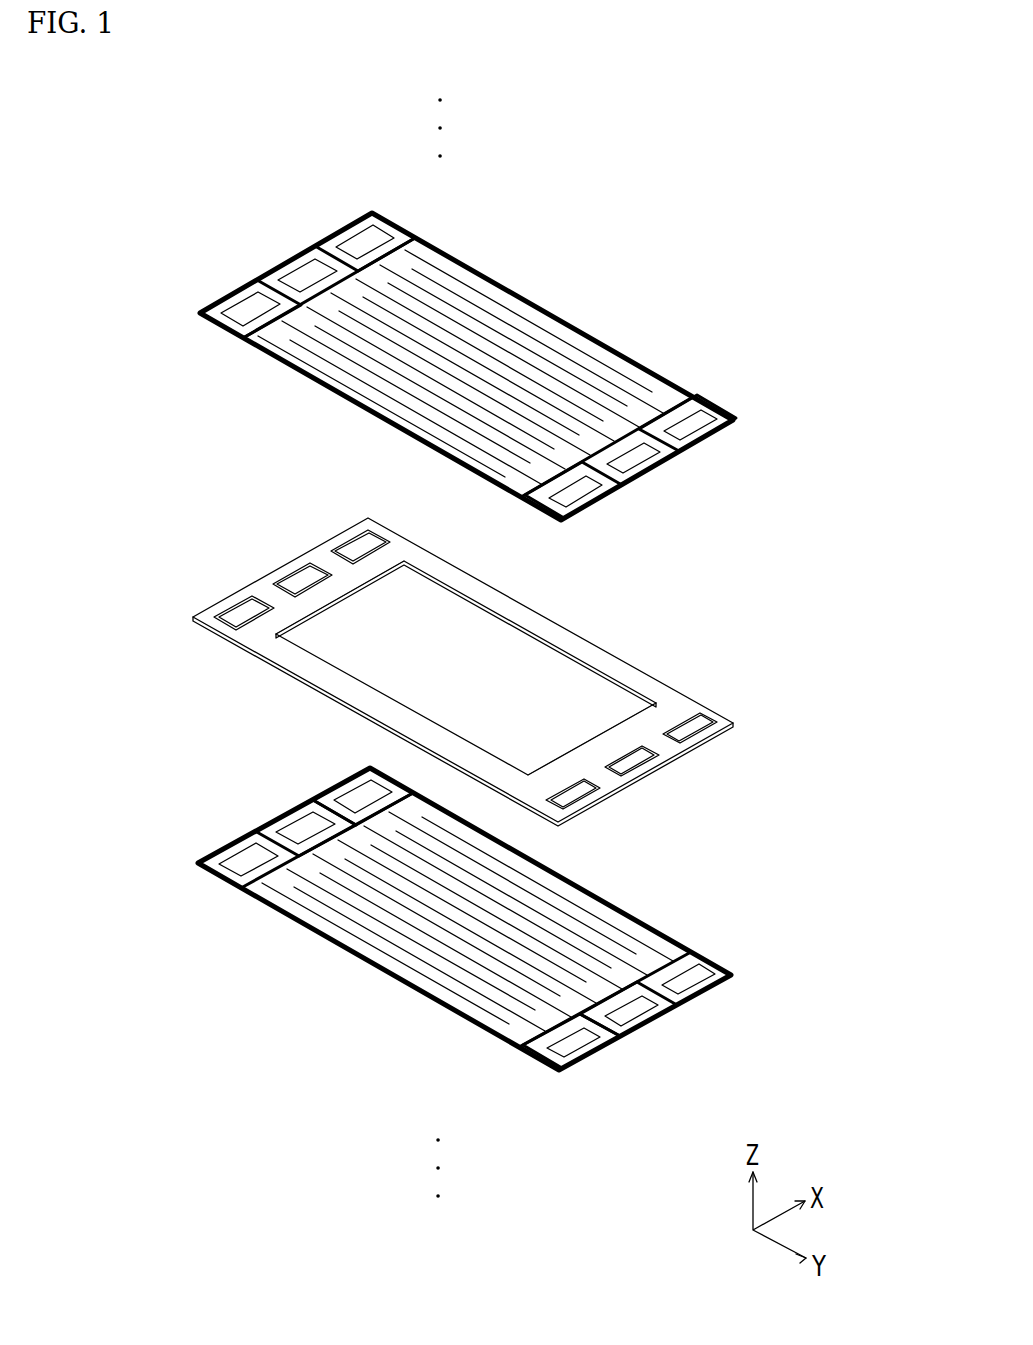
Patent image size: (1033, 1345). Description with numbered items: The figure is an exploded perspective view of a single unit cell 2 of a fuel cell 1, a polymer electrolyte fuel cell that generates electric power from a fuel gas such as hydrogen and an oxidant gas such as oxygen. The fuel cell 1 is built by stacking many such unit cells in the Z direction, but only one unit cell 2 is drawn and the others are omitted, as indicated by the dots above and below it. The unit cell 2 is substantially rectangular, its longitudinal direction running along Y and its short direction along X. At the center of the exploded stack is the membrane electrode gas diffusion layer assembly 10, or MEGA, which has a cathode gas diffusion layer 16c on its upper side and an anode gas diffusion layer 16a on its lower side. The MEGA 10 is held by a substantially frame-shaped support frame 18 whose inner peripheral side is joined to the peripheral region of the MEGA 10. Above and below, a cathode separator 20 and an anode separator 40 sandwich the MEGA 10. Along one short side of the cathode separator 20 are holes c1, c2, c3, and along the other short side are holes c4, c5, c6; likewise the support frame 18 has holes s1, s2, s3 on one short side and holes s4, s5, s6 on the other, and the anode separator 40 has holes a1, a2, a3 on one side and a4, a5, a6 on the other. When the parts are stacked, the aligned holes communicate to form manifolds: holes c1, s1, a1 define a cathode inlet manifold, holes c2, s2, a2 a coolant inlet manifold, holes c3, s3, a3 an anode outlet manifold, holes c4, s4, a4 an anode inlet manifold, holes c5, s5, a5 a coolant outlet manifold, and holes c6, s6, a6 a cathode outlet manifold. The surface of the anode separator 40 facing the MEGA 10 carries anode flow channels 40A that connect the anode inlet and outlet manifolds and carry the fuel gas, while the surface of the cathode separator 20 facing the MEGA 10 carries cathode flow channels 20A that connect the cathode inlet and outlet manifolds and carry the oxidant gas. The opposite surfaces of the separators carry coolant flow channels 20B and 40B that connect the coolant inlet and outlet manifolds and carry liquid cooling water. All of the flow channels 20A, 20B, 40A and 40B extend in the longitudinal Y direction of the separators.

The fuel cell 1 is at (762, 160).
The unit cell 2 is at (784, 428).
The membrane electrode gas diffusion layer assembly 10 is at (513, 673).
The anode gas diffusion layer 16a is at (562, 728).
The cathode gas diffusion layer 16c is at (323, 625).
The support frame 18 is at (740, 722).
The cathode separator 20 is at (468, 363).
The cathode flow channels 20A is at (290, 346).
The coolant flow channels 20B is at (455, 288).
The anode separator 40 is at (467, 918).
The anode flow channels 40A is at (440, 945).
The coolant flow channels 40B is at (492, 1020).
The hole c1 is at (360, 242).
The hole c2 is at (303, 273).
The hole c3 is at (250, 304).
The hole c4 is at (703, 441).
The hole c5 is at (641, 464).
The hole c6 is at (588, 497).
The hole s1 is at (362, 549).
The hole s2 is at (306, 578).
The hole s3 is at (252, 610).
The hole s4 is at (690, 733).
The hole s5 is at (632, 762).
The hole s6 is at (572, 797).
The hole a1 is at (357, 795).
The hole a2 is at (300, 823).
The hole a3 is at (250, 858).
The hole a4 is at (690, 985).
The hole a5 is at (633, 1013).
The hole a6 is at (590, 1055).